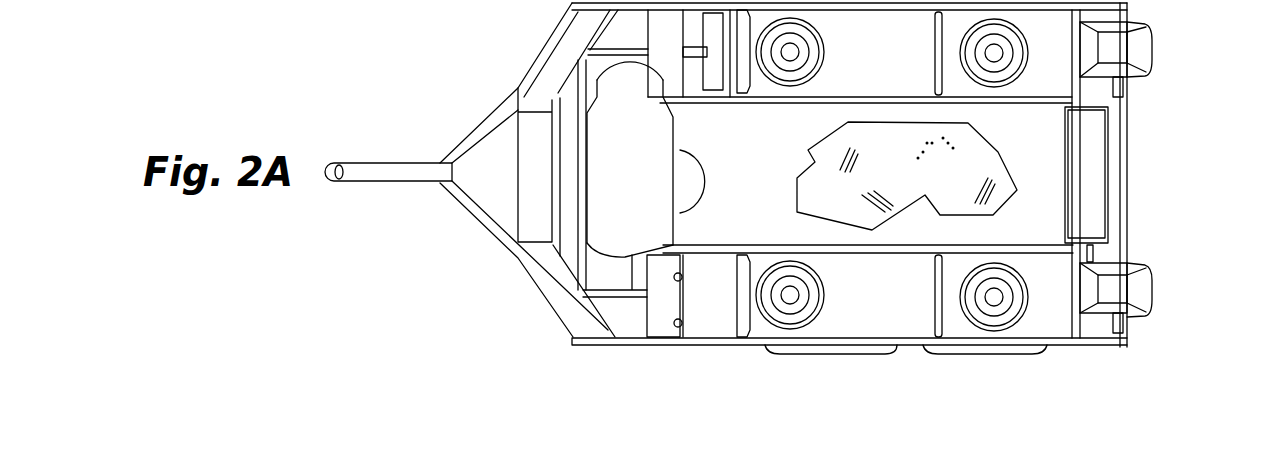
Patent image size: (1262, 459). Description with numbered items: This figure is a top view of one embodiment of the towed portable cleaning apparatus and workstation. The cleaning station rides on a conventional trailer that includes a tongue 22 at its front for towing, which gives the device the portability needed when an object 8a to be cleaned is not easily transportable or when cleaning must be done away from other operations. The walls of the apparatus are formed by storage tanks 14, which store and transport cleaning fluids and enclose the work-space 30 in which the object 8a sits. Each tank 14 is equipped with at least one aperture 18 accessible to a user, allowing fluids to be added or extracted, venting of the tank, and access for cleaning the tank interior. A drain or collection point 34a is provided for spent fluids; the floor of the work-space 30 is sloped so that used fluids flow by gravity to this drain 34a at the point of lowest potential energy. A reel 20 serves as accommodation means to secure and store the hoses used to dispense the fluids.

The object to be cleaned 8a is at (975, 150).
The storage tanks 14 is at (902, 323).
The aperture 18 is at (772, 313).
The reel 20 is at (1153, 45).
The tongue 22 is at (387, 135).
The work-space 30 is at (1037, 175).
The drain 34a is at (705, 180).